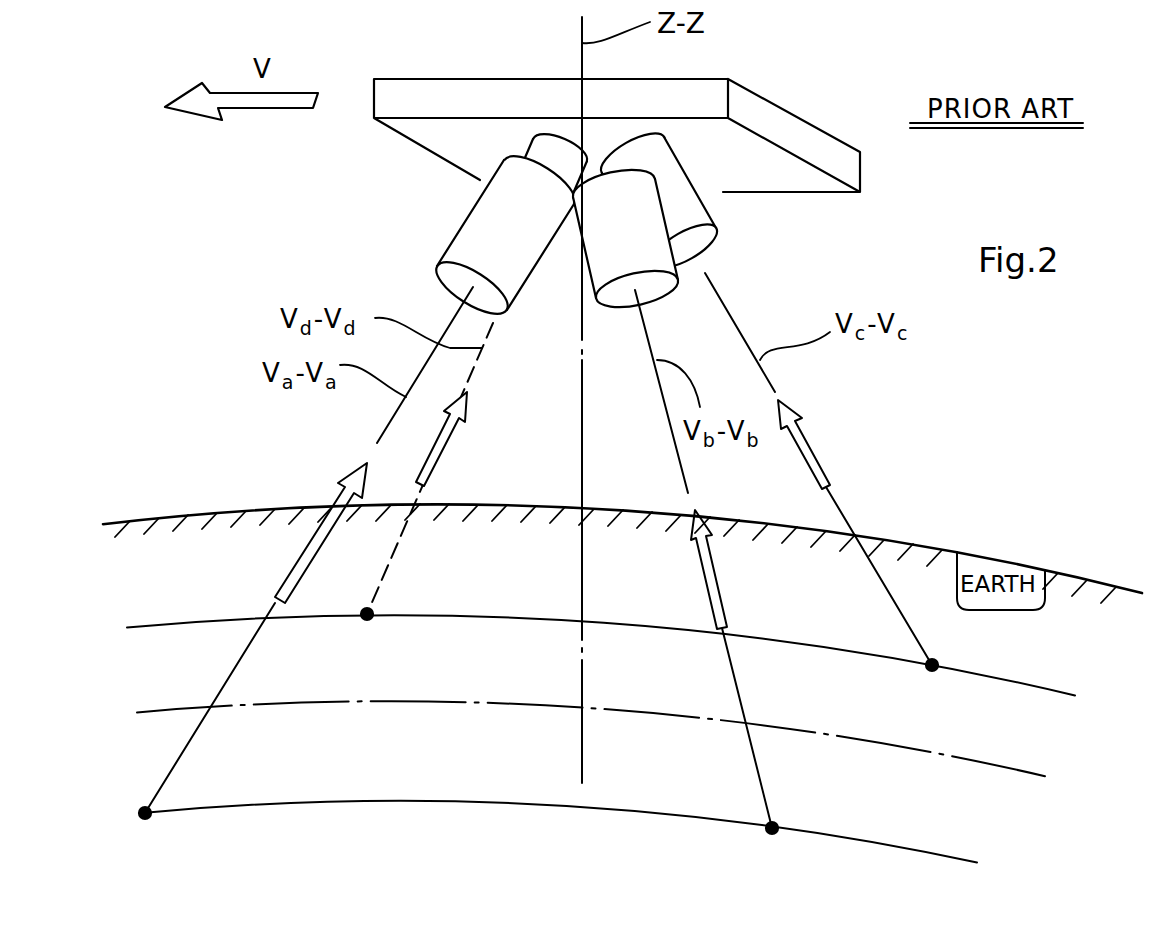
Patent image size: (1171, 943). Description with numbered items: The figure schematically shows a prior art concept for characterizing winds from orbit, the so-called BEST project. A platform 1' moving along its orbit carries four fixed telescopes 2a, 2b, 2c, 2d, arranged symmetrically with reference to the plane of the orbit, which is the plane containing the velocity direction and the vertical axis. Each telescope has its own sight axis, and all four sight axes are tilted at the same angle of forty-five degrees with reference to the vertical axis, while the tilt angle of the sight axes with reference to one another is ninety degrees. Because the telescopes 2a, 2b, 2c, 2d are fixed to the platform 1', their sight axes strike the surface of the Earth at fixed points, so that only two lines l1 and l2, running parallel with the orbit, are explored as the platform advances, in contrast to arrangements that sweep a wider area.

The platform 1' is at (619, 120).
The fixed telescope 2a is at (453, 235).
The fixed telescope 2b is at (660, 248).
The fixed telescope 2c is at (725, 220).
The fixed telescope 2d is at (533, 157).
The explored line l1 is at (933, 852).
The explored line l2 is at (1010, 678).